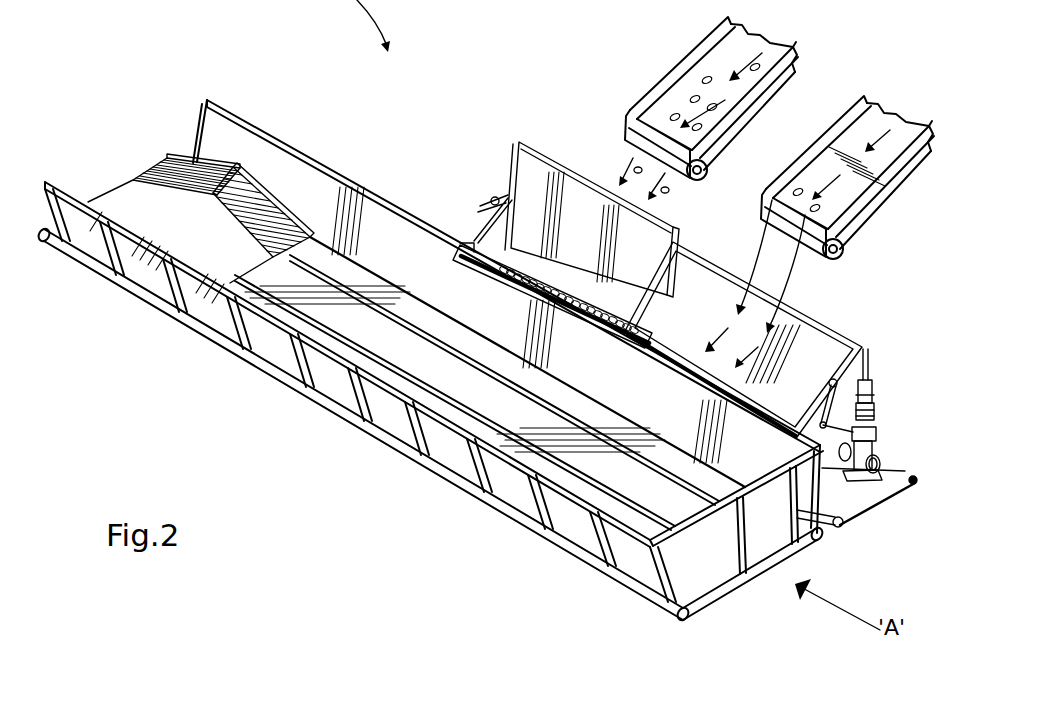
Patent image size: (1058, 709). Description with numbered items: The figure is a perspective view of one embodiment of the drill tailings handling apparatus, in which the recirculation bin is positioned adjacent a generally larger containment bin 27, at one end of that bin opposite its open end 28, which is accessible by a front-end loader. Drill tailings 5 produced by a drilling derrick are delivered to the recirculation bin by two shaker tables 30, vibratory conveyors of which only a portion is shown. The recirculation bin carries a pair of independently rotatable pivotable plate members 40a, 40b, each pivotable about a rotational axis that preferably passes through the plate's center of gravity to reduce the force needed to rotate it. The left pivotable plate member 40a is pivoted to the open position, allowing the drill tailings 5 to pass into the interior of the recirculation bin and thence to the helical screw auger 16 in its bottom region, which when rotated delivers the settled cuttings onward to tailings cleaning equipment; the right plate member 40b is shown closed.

The drill tailings 5 is at (695, 98).
The helical screw auger 16 is at (530, 294).
The containment bin 27 is at (397, 418).
The open end 28 is at (202, 80).
The shaker table 30 is at (727, 142).
The left pivotable plate member 40a is at (549, 150).
The right pivotable plate member 40b is at (818, 350).